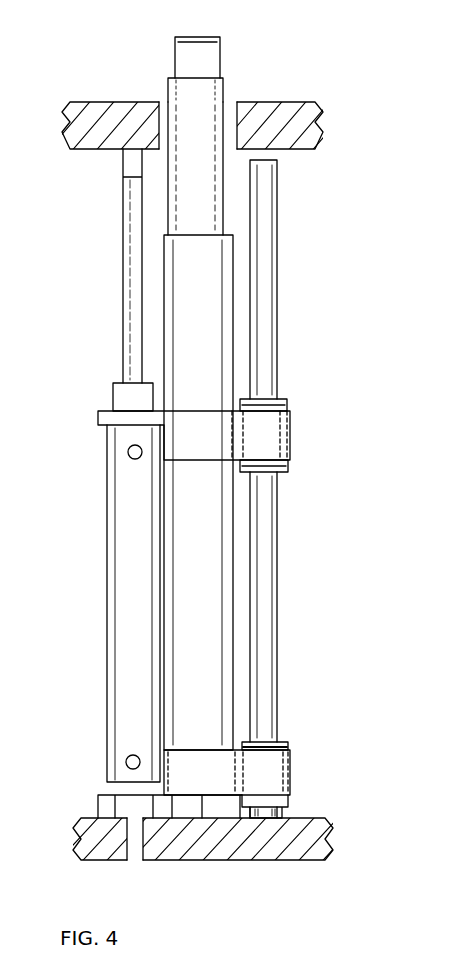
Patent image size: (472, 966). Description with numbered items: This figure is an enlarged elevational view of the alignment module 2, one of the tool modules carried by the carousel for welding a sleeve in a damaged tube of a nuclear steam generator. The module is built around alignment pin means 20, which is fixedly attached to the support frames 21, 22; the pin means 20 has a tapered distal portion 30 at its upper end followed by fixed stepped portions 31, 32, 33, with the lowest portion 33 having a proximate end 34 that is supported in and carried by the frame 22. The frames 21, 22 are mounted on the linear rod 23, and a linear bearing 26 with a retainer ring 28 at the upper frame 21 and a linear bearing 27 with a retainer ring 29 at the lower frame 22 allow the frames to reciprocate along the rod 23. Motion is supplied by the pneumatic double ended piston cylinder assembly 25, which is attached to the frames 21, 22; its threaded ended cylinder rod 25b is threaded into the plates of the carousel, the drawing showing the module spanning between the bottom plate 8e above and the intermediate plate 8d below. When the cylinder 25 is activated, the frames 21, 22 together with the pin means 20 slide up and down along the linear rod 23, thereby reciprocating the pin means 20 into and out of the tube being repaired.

The alignment module 2 is at (290, 375).
The alignment pin means 20 is at (148, 82).
The tapered distal portion 30 is at (215, 38).
The fixed stepped portion 31 is at (217, 88).
The fixed stepped portion 32 is at (207, 211).
The fixed stepped portion 33 is at (222, 281).
The threaded ended cylinder rod 25b is at (128, 266).
The pneumatic double ended piston cylinder assembly 25 is at (118, 613).
The support frame 21 is at (290, 443).
The linear bearing 26 is at (283, 397).
The retainer ring 28 is at (290, 462).
The linear rod 23 is at (270, 613).
The linear bearing 27 is at (280, 740).
The support frame 22 is at (290, 772).
The retainer ring 29 is at (290, 802).
The proximate end 34 is at (201, 797).
The bottom plate 8e is at (303, 108).
The intermediate plate 8d is at (278, 850).